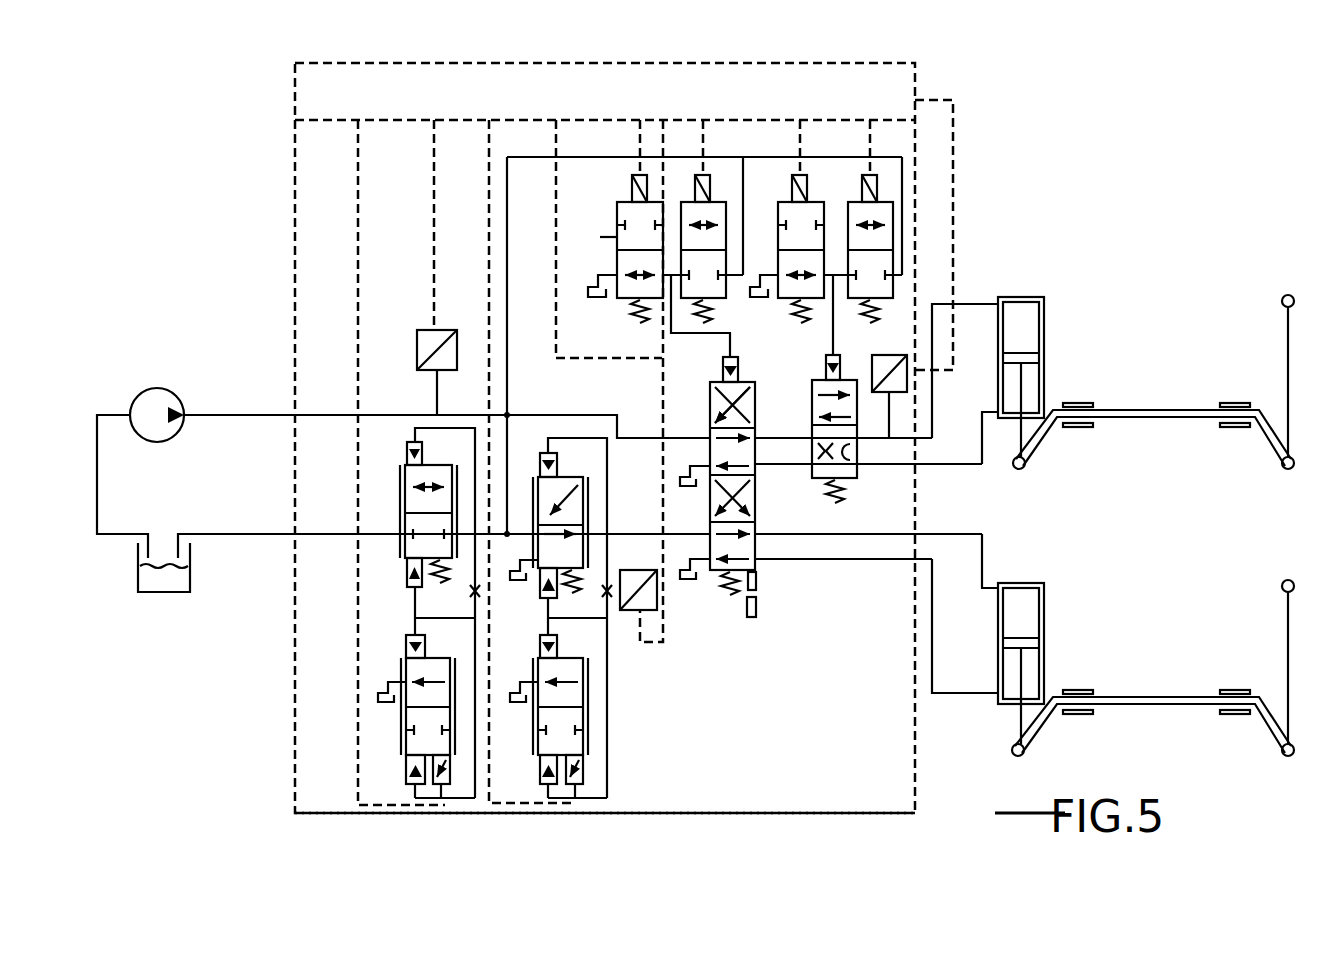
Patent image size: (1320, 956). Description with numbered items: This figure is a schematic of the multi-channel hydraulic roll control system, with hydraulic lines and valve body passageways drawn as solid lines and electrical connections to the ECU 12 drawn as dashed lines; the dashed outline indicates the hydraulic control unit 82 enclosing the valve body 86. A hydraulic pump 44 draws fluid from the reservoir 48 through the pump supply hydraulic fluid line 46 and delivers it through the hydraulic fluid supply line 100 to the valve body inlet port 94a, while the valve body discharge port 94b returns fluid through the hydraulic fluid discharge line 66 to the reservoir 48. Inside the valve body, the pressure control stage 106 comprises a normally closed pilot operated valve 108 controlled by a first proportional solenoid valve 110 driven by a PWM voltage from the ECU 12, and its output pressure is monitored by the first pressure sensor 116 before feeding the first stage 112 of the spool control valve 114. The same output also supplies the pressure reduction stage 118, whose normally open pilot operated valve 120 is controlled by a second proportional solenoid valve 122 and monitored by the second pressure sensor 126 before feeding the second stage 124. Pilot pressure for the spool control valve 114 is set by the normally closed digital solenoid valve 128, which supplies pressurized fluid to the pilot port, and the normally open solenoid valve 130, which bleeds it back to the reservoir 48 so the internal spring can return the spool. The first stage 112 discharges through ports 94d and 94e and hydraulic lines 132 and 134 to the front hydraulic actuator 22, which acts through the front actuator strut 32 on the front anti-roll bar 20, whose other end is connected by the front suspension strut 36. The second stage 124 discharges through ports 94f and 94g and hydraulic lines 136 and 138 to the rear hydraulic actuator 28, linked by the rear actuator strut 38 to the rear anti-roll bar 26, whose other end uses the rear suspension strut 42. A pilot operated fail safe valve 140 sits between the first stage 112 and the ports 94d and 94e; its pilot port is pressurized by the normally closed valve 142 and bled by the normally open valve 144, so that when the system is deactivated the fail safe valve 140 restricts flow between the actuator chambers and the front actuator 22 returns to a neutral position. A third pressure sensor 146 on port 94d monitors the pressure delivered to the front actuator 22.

The ECU 12 is at (916, 90).
The front anti-roll bar 20 is at (1158, 420).
The front hydraulic actuator 22 is at (1044, 331).
The rear anti-roll bar 26 is at (1137, 708).
The rear hydraulic actuator 28 is at (1044, 607).
The front actuator strut 32 is at (1012, 465).
The front suspension strut 36 is at (1282, 330).
The rear actuator strut 38 is at (1016, 720).
The rear suspension strut 42 is at (1282, 625).
The hydraulic pump 44 is at (137, 394).
The pump supply hydraulic fluid line 46 is at (97, 487).
The reservoir 48 is at (138, 580).
The hydraulic fluid discharge line 66 is at (200, 534).
The hydraulic control unit 82 is at (265, 239).
The valve body 86 is at (917, 755).
The valve body inlet port 94a is at (295, 410).
The valve body discharge port 94b is at (295, 538).
The first channel discharge port 94d is at (921, 448).
The first channel discharge port 94e is at (908, 468).
The second channel discharge port 94f is at (905, 537).
The second channel discharge port 94g is at (905, 565).
The hydraulic fluid supply line 100 is at (220, 410).
The pressure control stage 106 is at (391, 613).
The normally closed pilot operated valve 108 is at (400, 562).
The first proportional solenoid valve 110 is at (405, 725).
The first stage 112 is at (731, 478).
The spool control valve 114 is at (717, 370).
The first pressure sensor 116 is at (417, 351).
The pressure reduction stage 118 is at (640, 470).
The normally open pilot operated valve 120 is at (553, 484).
The second proportional solenoid valve 122 is at (583, 723).
The second stage 124 is at (756, 518).
The second pressure sensor 126 is at (659, 595).
The normally closed digital solenoid valve 128 is at (717, 304).
The normally open solenoid valve 130 is at (600, 237).
The hydraulic line 132 is at (963, 302).
The hydraulic line 134 is at (942, 464).
The hydraulic line 136 is at (985, 548).
The hydraulic line 138 is at (932, 620).
The fail safe valve 140 is at (812, 455).
The normally closed valve 142 is at (893, 202).
The normally open valve 144 is at (816, 210).
The third pressure sensor 146 is at (903, 408).